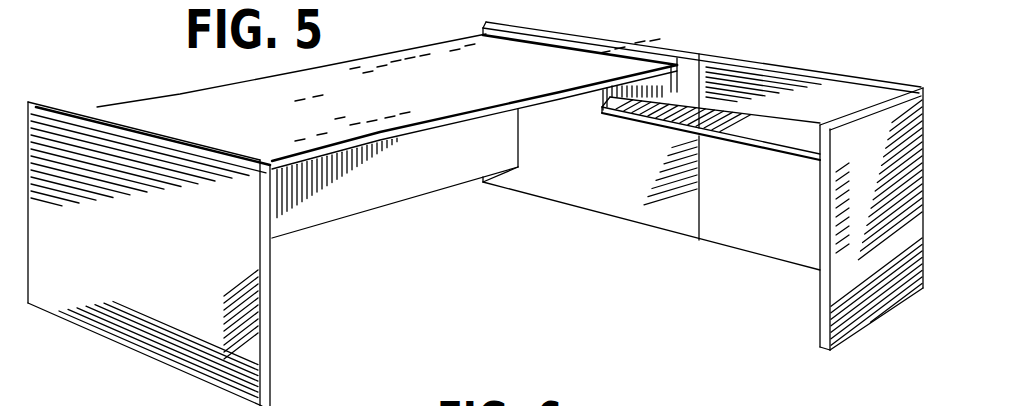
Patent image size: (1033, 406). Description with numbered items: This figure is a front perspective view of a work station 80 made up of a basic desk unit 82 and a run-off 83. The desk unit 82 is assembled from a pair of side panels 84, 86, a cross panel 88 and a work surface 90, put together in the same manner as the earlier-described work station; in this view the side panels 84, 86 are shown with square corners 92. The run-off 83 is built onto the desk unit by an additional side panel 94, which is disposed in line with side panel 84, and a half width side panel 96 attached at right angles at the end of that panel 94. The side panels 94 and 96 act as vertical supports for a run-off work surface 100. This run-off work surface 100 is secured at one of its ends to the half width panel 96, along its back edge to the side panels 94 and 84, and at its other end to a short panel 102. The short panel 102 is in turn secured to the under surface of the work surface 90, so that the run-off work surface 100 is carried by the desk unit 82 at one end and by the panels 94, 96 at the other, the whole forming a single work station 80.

The work station 80 is at (622, 22).
The basic desk unit 82 is at (355, 44).
The run-off 83 is at (935, 28).
The side panel 84 is at (610, 198).
The side panel 86 is at (177, 372).
The cross panel 88 is at (407, 180).
The work surface 90 is at (428, 94).
The square corners 92 is at (40, 102).
The additional side panel 94 is at (792, 85).
The half width side panel 96 is at (878, 305).
The run-off work surface 100 is at (777, 132).
The short panel 102 is at (603, 97).